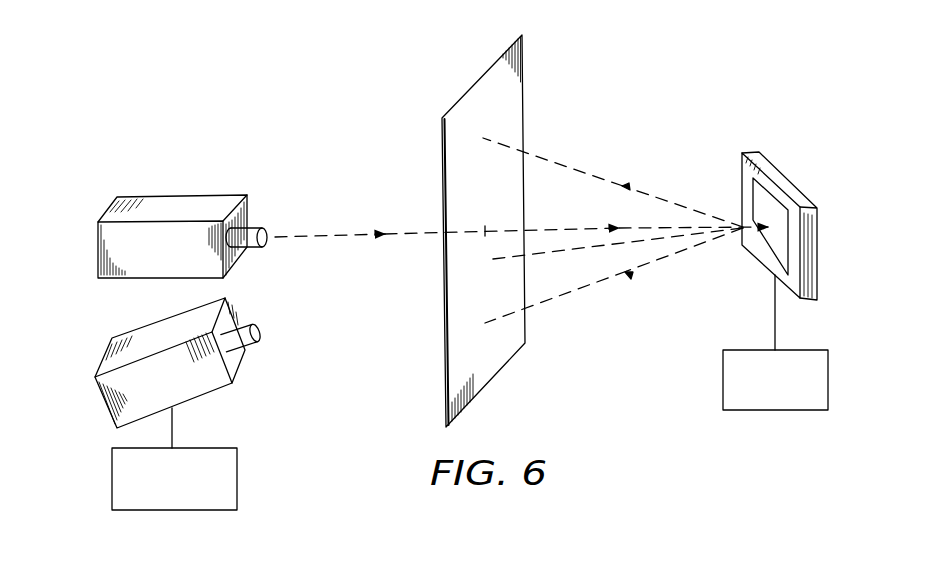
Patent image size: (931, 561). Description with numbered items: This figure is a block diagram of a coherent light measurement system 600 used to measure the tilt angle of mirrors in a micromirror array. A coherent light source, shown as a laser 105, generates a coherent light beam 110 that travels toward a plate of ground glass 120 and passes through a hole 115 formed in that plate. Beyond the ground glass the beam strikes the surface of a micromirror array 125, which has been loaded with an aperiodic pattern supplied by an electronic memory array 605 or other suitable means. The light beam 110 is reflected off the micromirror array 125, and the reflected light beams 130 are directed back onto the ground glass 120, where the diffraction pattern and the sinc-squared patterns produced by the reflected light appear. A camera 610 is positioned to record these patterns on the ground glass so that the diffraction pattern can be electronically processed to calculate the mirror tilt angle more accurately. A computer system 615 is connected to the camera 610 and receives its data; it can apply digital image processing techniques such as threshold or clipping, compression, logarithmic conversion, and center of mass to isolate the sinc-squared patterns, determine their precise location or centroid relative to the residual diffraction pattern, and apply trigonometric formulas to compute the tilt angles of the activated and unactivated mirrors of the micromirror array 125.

The laser 105 is at (175, 205).
The coherent light beam 110 is at (332, 233).
The hole 115 is at (486, 226).
The plate of ground glass 120 is at (520, 97).
The micromirror array 125 is at (777, 178).
The reflected light beams 130 is at (650, 188).
The coherent light measurement system 600 is at (674, 83).
The electronic memory array 605 is at (775, 412).
The camera 610 is at (150, 335).
The computer system 615 is at (112, 480).